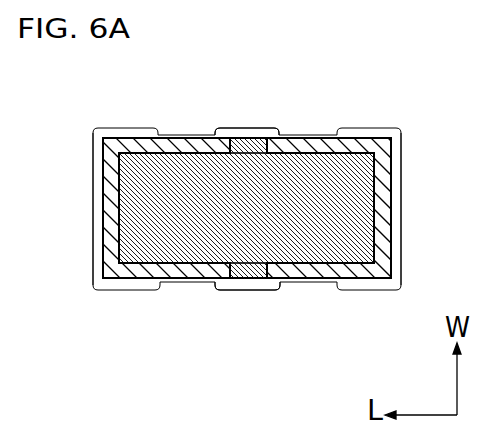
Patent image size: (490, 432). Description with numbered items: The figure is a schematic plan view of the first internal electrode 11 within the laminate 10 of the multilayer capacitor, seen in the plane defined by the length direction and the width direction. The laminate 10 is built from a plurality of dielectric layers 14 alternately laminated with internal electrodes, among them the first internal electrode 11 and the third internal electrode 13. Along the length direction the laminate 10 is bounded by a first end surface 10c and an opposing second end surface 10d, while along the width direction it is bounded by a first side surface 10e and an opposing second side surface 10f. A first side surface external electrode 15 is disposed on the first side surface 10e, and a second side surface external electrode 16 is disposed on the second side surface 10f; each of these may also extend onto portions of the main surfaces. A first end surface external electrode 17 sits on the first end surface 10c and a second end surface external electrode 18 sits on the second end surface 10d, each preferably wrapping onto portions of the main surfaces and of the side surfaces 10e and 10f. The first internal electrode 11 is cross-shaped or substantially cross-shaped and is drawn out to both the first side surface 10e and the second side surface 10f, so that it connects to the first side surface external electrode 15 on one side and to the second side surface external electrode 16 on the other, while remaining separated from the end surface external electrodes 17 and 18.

The laminate 10 is at (310, 136).
The first internal electrode 11 is at (287, 247).
The third internal electrode 13 is at (136, 208).
The dielectric layer 14 is at (353, 267).
The first side surface external electrode 15 is at (242, 285).
The second side surface external electrode 16 is at (240, 135).
The first end surface external electrode 17 is at (93, 170).
The second end surface external electrode 18 is at (401, 173).
The first end surface 10c is at (102, 230).
The second end surface 10d is at (392, 238).
The first side surface 10e is at (173, 280).
The second side surface 10f is at (172, 135).